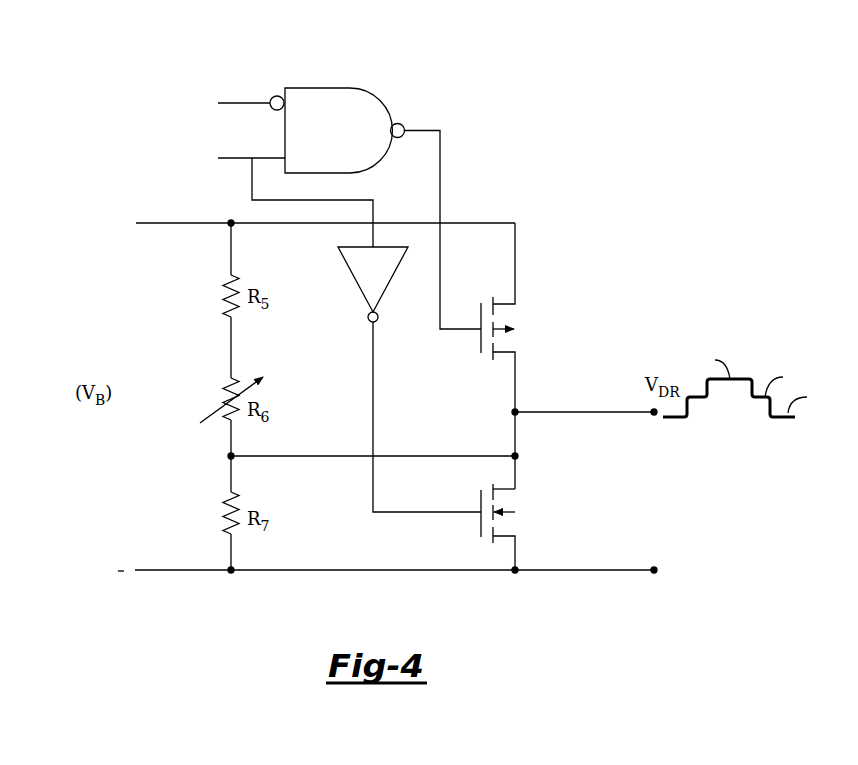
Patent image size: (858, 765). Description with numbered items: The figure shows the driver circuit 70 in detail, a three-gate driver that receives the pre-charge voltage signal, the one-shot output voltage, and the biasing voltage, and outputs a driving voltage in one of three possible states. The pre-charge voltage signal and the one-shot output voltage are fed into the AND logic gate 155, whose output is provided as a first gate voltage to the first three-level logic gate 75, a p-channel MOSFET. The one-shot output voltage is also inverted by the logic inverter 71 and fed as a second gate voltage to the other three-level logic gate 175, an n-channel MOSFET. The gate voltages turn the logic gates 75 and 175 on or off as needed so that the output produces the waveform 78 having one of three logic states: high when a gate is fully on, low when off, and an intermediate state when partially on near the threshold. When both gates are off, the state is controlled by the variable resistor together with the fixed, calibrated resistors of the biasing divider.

The driver circuit 70 is at (677, 137).
The AND logic gate 155 is at (341, 141).
The logic inverter 71 is at (387, 279).
The first three-level logic gate 75 is at (540, 303).
The three-level logic gate 175 is at (528, 533).
The waveform 78 is at (750, 347).